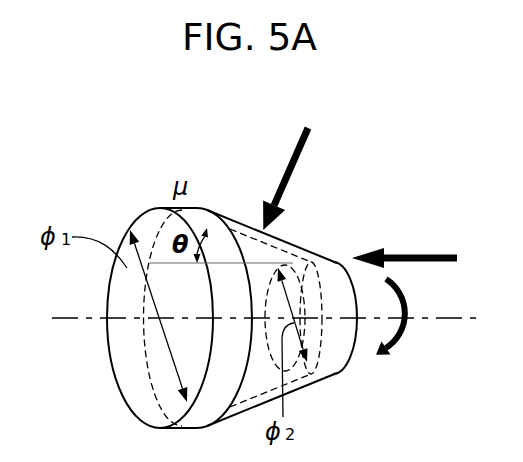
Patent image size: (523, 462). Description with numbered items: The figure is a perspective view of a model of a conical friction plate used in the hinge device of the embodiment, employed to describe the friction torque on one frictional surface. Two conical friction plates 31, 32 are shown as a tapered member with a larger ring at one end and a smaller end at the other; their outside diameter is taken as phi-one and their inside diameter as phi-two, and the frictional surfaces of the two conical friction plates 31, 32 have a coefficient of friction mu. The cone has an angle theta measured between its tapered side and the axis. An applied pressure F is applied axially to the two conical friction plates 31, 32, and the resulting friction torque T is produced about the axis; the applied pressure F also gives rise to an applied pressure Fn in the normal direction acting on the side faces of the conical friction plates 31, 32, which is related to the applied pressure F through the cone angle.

The conical friction plate 31 is at (245, 221).
The conical friction plate 32 is at (139, 215).
The applied pressure in the normal direction Fn is at (295, 179).
The applied pressure F is at (404, 246).
The friction torque T is at (400, 317).